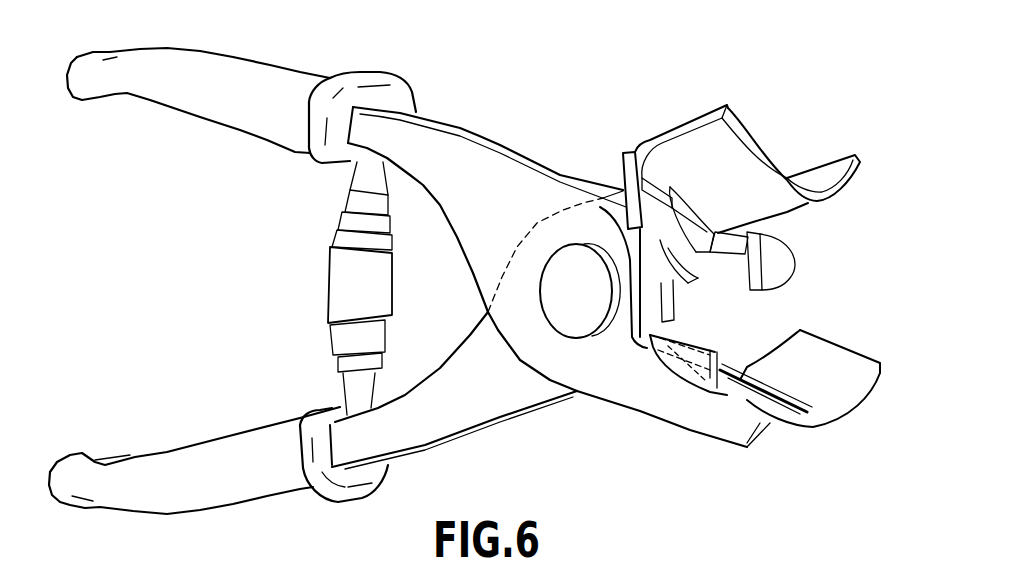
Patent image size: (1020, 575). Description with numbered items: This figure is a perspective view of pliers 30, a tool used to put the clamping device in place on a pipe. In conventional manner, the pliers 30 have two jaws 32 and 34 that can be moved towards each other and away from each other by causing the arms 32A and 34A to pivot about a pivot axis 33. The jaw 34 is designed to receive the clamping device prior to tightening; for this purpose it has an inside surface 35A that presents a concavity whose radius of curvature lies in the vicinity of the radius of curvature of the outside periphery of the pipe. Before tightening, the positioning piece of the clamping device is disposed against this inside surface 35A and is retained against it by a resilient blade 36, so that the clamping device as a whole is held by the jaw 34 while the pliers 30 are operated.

The pliers 30 is at (535, 273).
The jaw 32 is at (763, 221).
The arm 32A is at (194, 480).
The pivot axis 33 is at (589, 304).
The jaw 34 is at (780, 360).
The arm 34A is at (198, 84).
The inside surface 35A is at (825, 381).
The resilient blade 36 is at (771, 382).